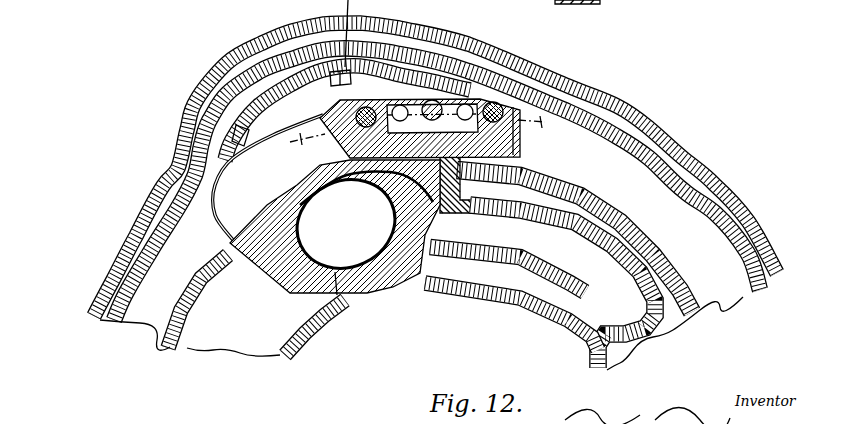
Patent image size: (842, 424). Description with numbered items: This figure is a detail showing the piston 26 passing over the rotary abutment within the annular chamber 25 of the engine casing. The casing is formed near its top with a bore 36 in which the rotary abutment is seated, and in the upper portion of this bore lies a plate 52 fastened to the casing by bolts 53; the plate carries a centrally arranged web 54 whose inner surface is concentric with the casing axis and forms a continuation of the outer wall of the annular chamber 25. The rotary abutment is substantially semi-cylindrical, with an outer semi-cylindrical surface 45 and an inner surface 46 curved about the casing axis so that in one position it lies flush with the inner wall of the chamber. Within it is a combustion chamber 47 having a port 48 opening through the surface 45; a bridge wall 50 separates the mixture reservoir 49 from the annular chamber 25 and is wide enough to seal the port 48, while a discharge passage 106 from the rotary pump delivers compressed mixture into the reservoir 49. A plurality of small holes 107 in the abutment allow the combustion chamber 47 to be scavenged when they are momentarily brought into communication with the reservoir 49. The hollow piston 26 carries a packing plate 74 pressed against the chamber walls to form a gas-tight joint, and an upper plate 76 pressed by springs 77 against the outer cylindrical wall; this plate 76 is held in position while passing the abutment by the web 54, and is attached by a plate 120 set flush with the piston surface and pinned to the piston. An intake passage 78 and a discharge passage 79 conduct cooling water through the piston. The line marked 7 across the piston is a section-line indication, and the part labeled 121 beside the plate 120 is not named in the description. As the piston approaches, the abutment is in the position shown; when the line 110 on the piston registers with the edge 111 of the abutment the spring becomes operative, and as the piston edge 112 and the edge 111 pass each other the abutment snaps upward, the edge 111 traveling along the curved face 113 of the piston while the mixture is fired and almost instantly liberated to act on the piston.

The bore 36 is at (233, 66).
The plate 52 is at (264, 77).
The bolts 53 is at (233, 120).
The web 54 is at (312, 100).
The annular chamber 25 is at (160, 282).
The inner surface 46 is at (263, 213).
The combustion chamber 47 is at (292, 300).
The outer semi-cylindrical surface 45 is at (367, 302).
The small holes 107 is at (335, 272).
The line 110 is at (318, 262).
The edge 111 is at (413, 192).
The edge 112 is at (355, 192).
The curved face 113 is at (320, 152).
The packing plate 74 is at (386, 180).
The springs 77 is at (340, 128).
The section line 7 is at (417, 138).
The plate 76 is at (352, 100).
The plate 120 is at (378, 103).
The intake passage 78 is at (415, 100).
The discharge passage 79 is at (468, 103).
The piston 26 is at (490, 102).
The rivet 121 is at (495, 106).
The bridge wall 50 is at (513, 145).
The port 48 is at (420, 245).
The discharge passage 106 is at (433, 268).
The reservoir 49 is at (518, 232).